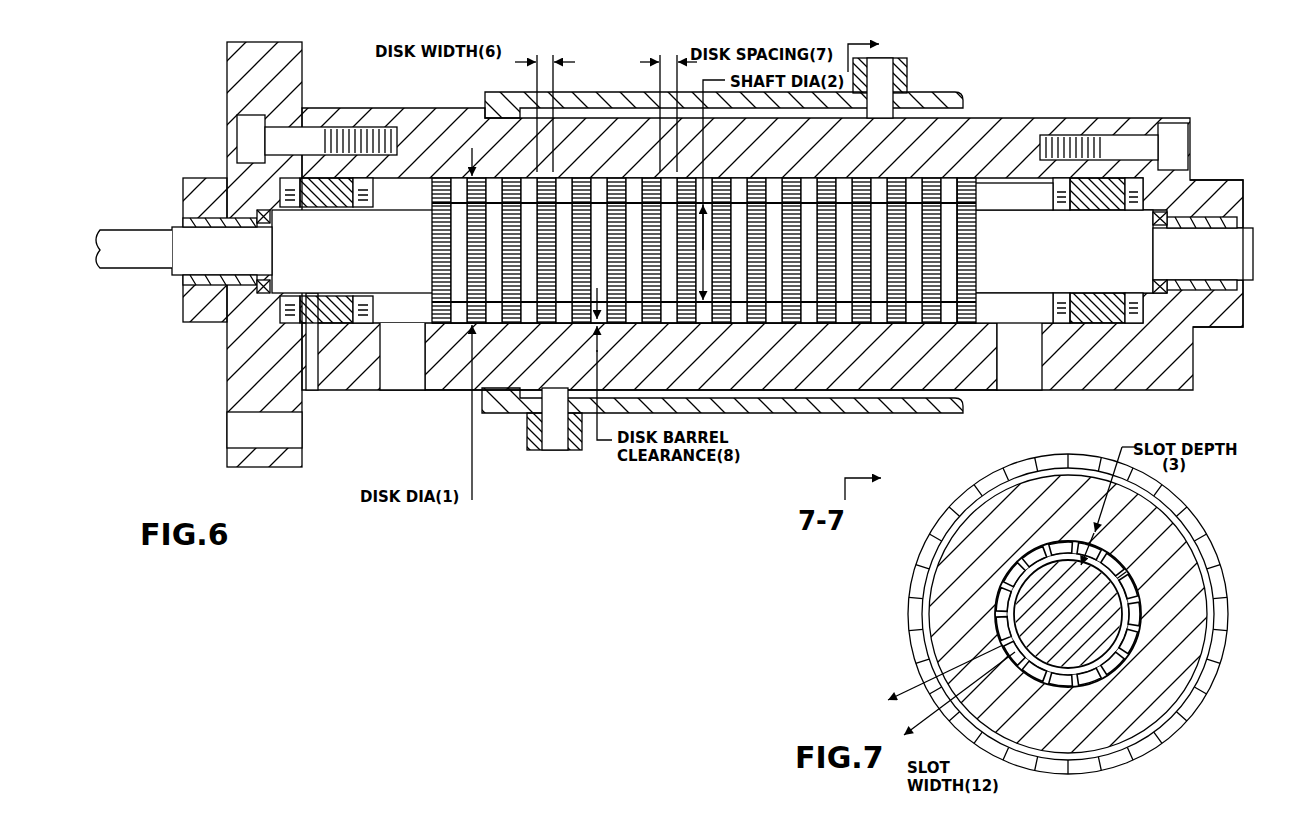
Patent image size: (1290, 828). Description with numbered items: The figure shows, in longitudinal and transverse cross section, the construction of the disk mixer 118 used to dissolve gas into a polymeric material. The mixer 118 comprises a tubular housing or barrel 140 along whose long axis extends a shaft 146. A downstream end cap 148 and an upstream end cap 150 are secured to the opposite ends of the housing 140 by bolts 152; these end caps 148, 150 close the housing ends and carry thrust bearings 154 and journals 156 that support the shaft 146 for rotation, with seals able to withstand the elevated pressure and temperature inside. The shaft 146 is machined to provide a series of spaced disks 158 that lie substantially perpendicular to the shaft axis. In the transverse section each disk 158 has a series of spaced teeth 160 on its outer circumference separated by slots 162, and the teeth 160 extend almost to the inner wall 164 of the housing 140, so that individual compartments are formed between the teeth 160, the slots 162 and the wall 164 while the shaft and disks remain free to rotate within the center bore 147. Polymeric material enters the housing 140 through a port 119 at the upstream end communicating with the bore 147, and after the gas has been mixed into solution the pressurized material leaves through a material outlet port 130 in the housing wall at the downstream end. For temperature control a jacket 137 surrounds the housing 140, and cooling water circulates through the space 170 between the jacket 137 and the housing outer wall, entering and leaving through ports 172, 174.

In FIG. 6, the disk mixer 118 is at (445, 392).
In FIG. 6, the port 119 is at (1019, 375).
In FIG. 6, the material outlet port 130 is at (386, 394).
In FIG. 6, the jacket 137 is at (615, 95).
In FIG. 7, the jacket 137 is at (918, 583).
In FIG. 6, the tubular housing or barrel 140 is at (822, 362).
In FIG. 7, the tubular housing or barrel 140 is at (970, 550).
In FIG. 6, the shaft 146 is at (352, 267).
In FIG. 7, the shaft 146 is at (1048, 622).
In FIG. 6, the center bore 147 is at (1008, 190).
In FIG. 7, the center bore 147 is at (1150, 566).
In FIG. 6, the downstream end cap 148 is at (1208, 196).
In FIG. 6, the upstream end cap 150 is at (245, 378).
In FIG. 6, the bolts 152 is at (280, 140).
In FIG. 6, the thrust bearings 154 is at (262, 276).
In FIG. 6, the journals 156 is at (674, 253).
In FIG. 6, the spaced disks 158 is at (434, 248).
In FIG. 7, the spaced disks 158 is at (1143, 603).
In FIG. 6, the teeth 160 is at (976, 250).
In FIG. 7, the teeth 160 is at (1108, 657).
In FIG. 6, the slots 162 is at (982, 292).
In FIG. 7, the slots 162 is at (1000, 660).
In FIG. 6, the inner wall 164 is at (772, 320).
In FIG. 7, the inner wall 164 is at (996, 604).
In FIG. 6, the space 170 is at (876, 402).
In FIG. 7, the space 170 is at (982, 490).
In FIG. 6, the cooling water inlet port 172 is at (555, 452).
In FIG. 6, the cooling water outlet port 174 is at (882, 62).